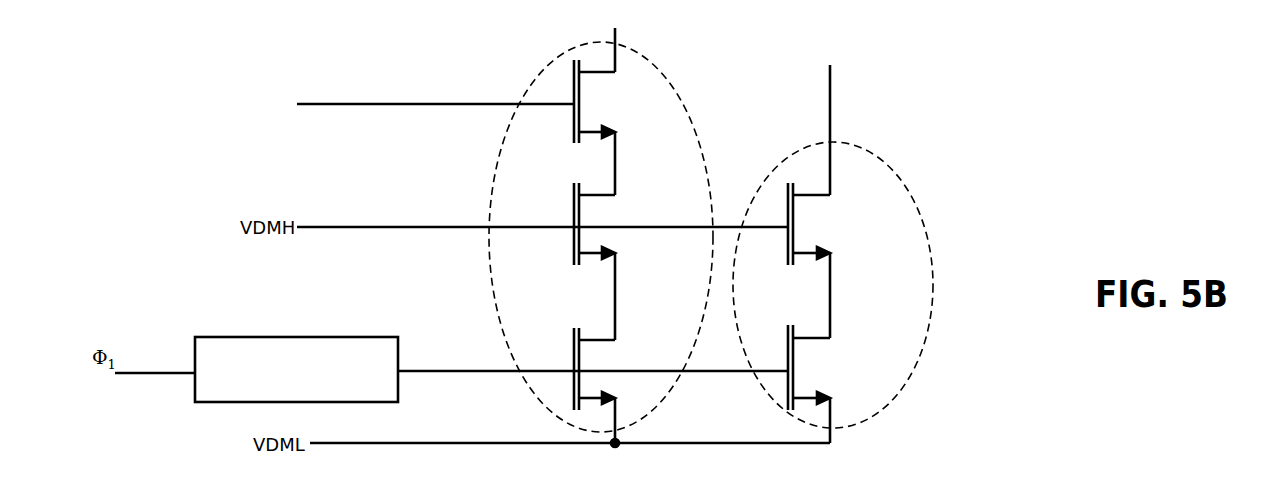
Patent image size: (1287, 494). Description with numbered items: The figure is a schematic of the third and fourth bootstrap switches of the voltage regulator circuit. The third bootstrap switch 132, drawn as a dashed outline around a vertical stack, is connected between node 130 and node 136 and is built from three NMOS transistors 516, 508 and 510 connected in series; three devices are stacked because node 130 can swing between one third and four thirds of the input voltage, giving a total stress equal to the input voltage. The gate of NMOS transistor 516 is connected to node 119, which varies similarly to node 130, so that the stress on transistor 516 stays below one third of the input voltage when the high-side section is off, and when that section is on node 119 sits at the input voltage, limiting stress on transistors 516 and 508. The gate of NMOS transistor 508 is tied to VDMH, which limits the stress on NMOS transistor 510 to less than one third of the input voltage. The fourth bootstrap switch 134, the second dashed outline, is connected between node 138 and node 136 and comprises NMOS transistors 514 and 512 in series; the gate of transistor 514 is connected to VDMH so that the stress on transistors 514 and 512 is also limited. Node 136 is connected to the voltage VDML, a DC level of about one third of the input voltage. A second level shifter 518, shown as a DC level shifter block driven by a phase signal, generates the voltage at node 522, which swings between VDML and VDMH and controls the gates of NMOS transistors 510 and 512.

The node 119 is at (323, 104).
The node 130 is at (617, 42).
The third bootstrap switch 132 is at (494, 170).
The fourth bootstrap switch 134 is at (815, 143).
The node 136 is at (435, 443).
The node 138 is at (832, 88).
The NMOS transistor 508 is at (610, 212).
The NMOS transistor 510 is at (618, 349).
The NMOS transistor 512 is at (820, 367).
The NMOS transistor 514 is at (830, 211).
The NMOS transistor 516 is at (600, 107).
The second level shifter 518 is at (295, 337).
The node 522 is at (425, 371).